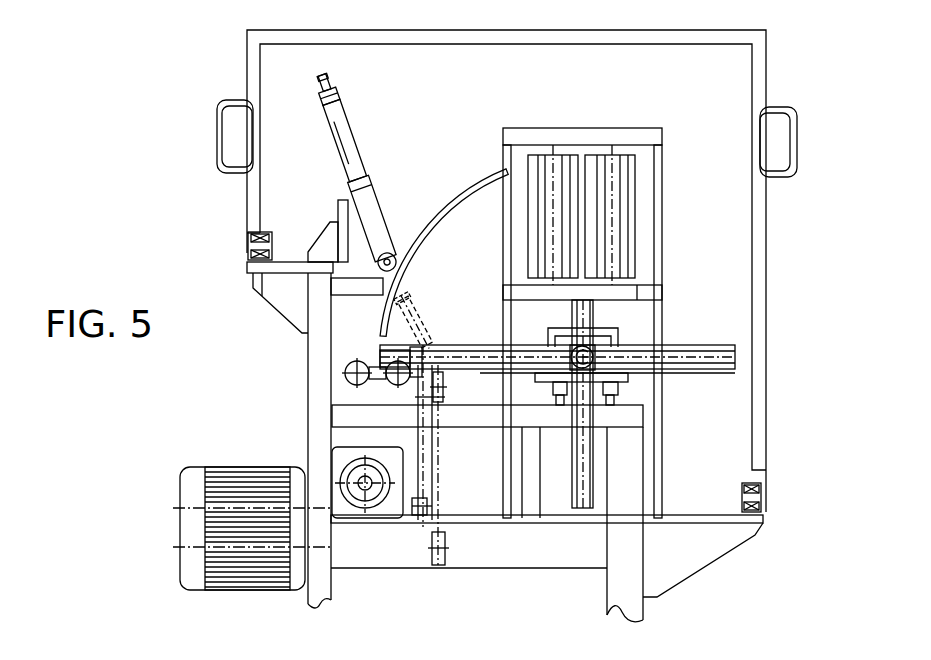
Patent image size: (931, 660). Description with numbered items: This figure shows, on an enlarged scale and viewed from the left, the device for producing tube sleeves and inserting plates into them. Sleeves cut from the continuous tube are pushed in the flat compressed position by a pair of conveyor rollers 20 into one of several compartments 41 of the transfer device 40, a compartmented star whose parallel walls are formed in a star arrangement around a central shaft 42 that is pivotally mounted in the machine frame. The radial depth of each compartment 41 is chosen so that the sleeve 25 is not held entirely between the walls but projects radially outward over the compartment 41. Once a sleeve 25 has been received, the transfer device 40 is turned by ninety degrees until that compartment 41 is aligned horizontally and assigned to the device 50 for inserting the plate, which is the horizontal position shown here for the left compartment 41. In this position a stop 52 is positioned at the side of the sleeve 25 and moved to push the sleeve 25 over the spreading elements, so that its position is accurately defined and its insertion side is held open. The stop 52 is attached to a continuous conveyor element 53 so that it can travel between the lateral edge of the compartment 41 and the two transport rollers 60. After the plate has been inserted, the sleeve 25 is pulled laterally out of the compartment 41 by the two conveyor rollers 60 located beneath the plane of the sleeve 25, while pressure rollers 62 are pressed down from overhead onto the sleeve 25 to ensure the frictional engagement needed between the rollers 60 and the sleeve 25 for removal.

The pair of conveyor rollers 20 is at (565, 200).
The sleeve 25 is at (470, 357).
The transfer device 40 is at (628, 323).
The compartment 41 is at (640, 368).
The shaft 42 is at (598, 355).
The device for inserting the plate 50 is at (470, 388).
The stop 52 is at (414, 347).
The continuous conveyor element 53 is at (417, 410).
The conveyor rollers 60 is at (388, 378).
The pressure rollers 62 is at (392, 252).